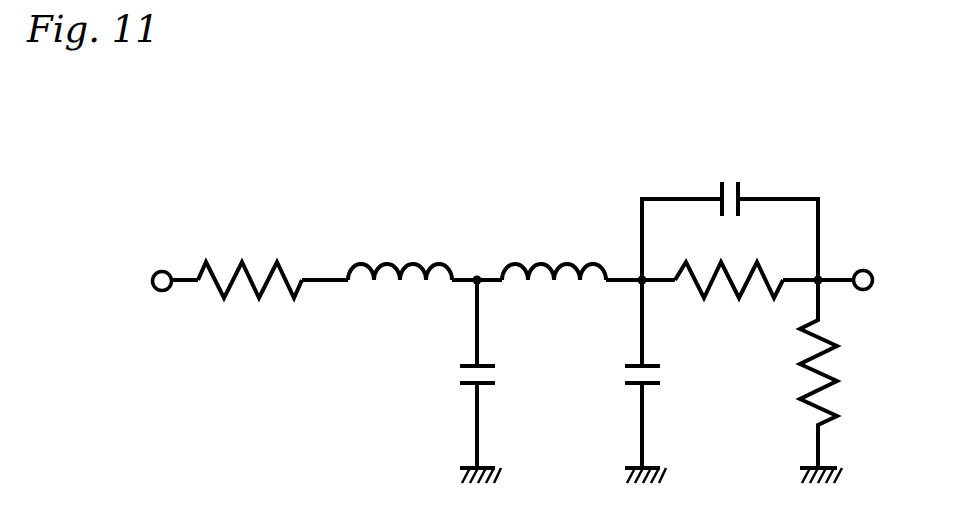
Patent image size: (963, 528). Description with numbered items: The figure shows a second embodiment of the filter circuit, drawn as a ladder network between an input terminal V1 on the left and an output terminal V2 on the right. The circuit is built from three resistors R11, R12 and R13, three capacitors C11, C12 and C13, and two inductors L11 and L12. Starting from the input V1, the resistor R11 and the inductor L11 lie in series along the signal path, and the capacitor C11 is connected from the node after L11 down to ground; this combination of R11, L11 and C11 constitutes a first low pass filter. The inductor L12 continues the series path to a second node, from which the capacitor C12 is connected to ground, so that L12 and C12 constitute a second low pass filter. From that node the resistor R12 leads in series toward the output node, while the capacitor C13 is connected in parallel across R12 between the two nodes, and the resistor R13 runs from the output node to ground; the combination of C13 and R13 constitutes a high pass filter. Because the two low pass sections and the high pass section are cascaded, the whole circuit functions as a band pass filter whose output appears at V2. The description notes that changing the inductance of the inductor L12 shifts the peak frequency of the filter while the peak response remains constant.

The input terminal voltage V1 is at (132, 278).
The resistor R11 is at (250, 312).
The inductor L11 is at (400, 234).
The inductor L12 is at (554, 234).
The capacitor C11 is at (440, 381).
The capacitor C12 is at (609, 381).
The resistor R12 is at (729, 310).
The capacitor C13 is at (730, 202).
The resistor R13 is at (859, 381).
The output terminal voltage V2 is at (899, 276).